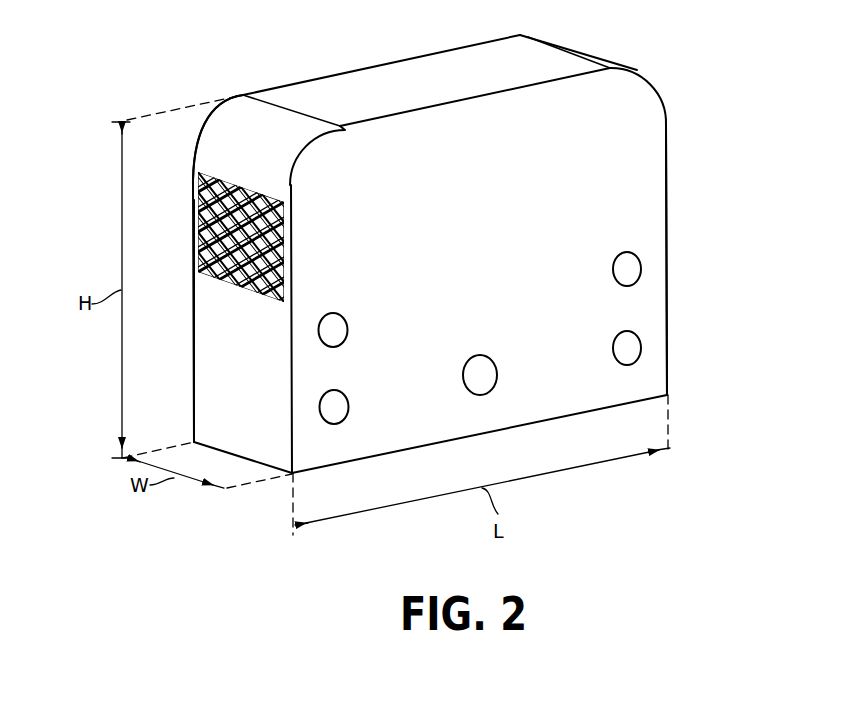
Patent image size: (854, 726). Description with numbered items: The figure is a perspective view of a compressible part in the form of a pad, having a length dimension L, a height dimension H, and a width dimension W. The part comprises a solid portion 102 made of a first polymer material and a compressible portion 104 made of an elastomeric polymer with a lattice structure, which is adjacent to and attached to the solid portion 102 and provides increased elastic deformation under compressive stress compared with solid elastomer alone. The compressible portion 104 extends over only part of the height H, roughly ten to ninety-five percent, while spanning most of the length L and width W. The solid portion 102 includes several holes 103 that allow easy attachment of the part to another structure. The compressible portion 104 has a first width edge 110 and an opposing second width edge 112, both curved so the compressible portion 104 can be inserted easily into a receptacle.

The first width edge 110 is at (642, 71).
The second width edge 112 is at (215, 150).
The compressible portion 104 is at (294, 202).
The solid portion 102 is at (652, 269).
The holes 103 is at (632, 352).